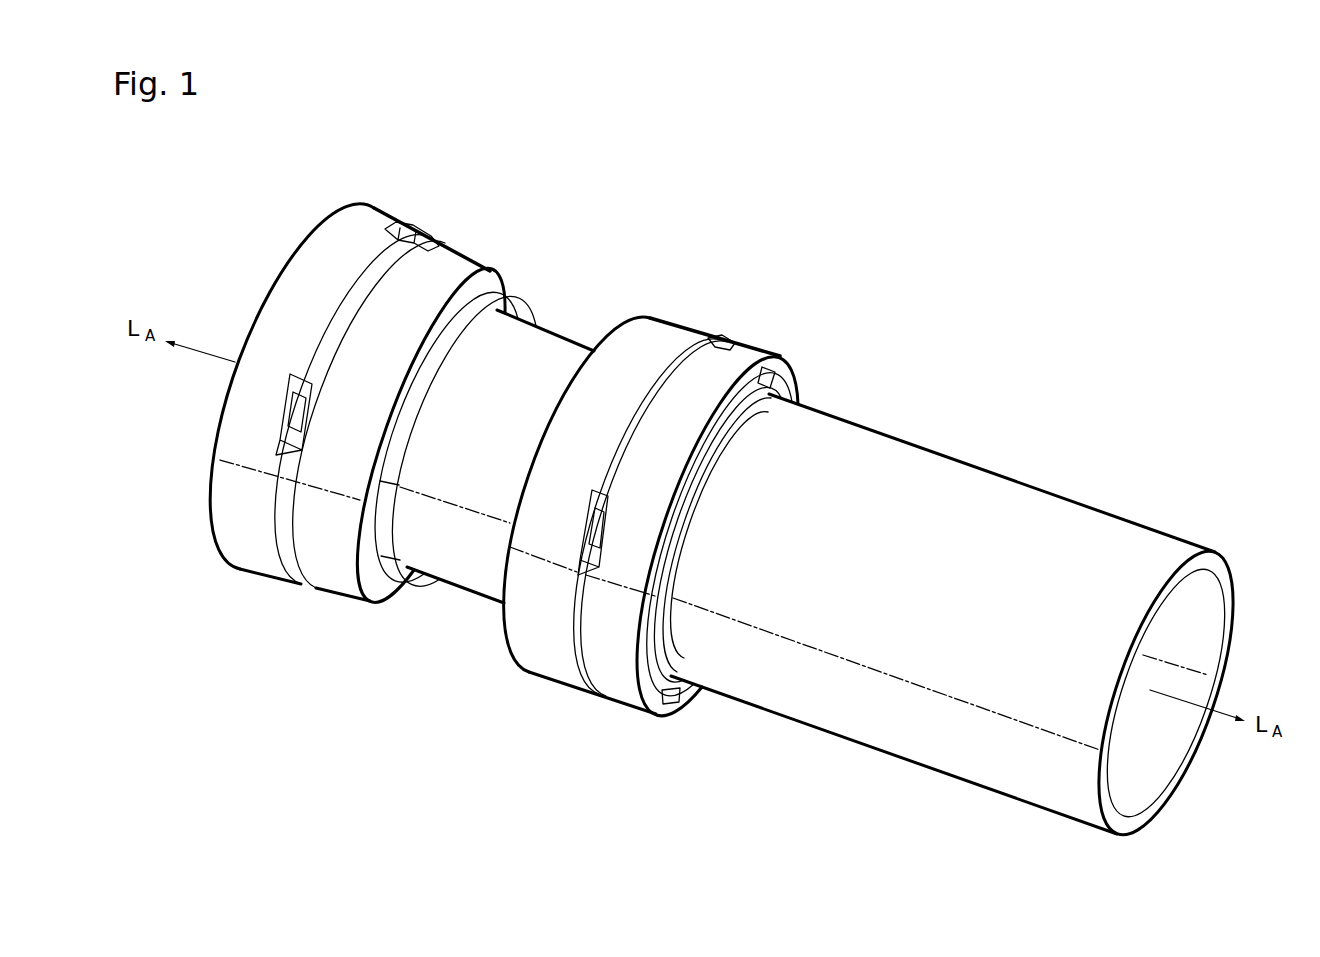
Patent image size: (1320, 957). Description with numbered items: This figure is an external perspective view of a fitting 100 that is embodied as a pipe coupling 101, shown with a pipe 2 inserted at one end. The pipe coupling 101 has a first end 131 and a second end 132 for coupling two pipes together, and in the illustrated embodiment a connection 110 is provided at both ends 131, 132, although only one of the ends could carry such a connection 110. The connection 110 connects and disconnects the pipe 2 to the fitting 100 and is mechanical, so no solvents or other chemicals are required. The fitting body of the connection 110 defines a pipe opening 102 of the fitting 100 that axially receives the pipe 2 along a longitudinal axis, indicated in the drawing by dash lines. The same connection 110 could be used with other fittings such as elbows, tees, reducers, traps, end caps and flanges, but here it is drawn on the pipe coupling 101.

The pipe 2 is at (972, 443).
The fitting 100 is at (547, 318).
The pipe coupling 101 is at (727, 278).
The pipe opening 102 is at (272, 250).
The connection 110 is at (766, 336).
The first end 131 is at (362, 198).
The second end 132 is at (668, 318).